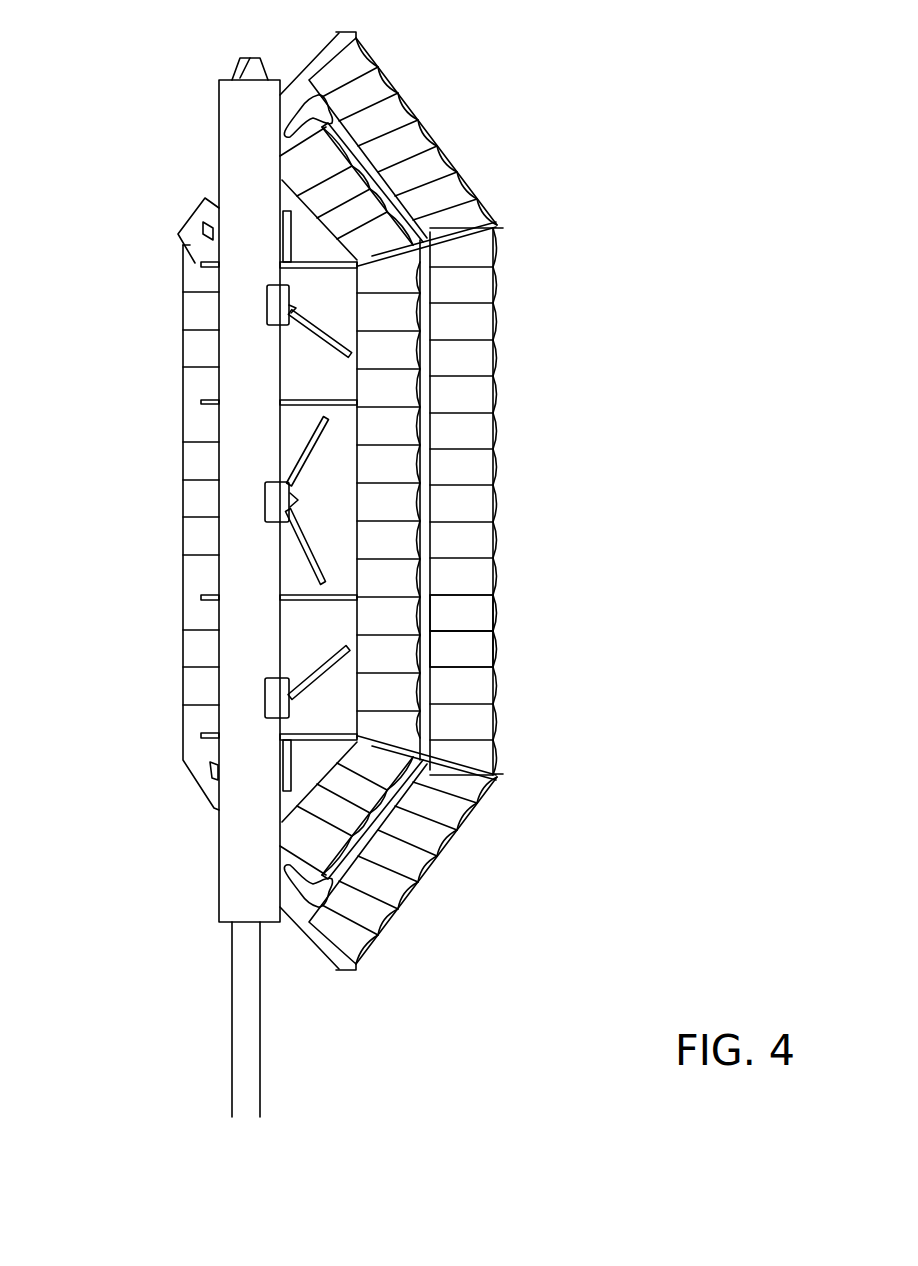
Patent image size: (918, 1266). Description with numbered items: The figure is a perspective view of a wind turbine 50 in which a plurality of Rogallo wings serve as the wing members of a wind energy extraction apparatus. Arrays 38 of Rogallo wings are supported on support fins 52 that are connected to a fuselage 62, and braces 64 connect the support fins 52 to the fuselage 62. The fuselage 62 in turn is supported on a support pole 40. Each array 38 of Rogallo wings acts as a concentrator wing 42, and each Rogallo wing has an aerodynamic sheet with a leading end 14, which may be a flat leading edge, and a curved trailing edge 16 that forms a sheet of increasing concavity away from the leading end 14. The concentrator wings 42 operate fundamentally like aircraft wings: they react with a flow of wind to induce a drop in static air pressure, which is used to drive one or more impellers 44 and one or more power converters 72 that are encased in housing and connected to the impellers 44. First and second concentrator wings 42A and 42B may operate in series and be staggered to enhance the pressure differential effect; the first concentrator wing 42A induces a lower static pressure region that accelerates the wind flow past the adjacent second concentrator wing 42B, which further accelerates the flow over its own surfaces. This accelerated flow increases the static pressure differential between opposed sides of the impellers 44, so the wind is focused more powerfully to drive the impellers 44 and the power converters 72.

The turbine 50 is at (82, 168).
The array of Rogallo wings 38 is at (439, 131).
The support fin 52 is at (490, 218).
The concentrator wing 42 is at (542, 478).
The first concentrator wing 42A is at (497, 281).
The second concentrator wing 42B is at (420, 345).
The trailing edge 16 is at (497, 621).
The leading end 14 is at (433, 653).
The fuselage 62 is at (268, 431).
The power converter 72 is at (287, 329).
The impeller 44 is at (317, 449).
The brace 64 is at (288, 603).
The support pole 40 is at (261, 1043).